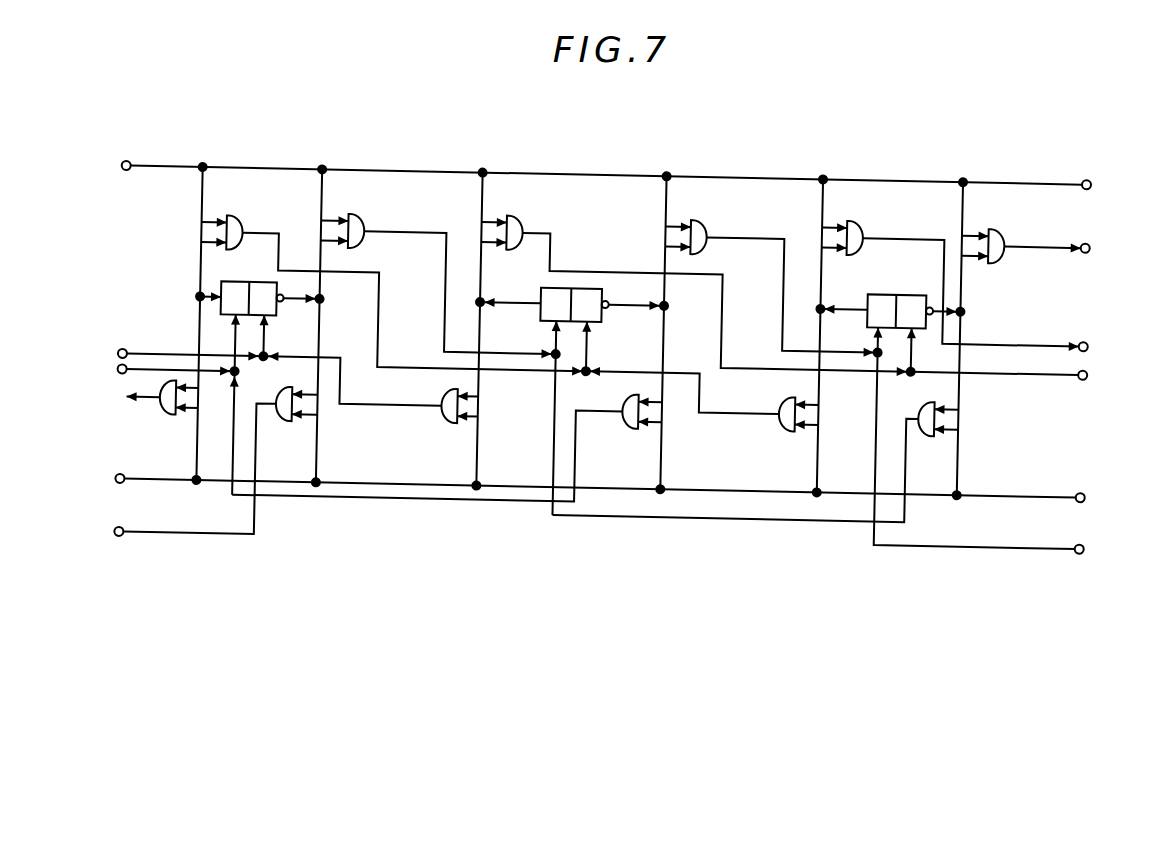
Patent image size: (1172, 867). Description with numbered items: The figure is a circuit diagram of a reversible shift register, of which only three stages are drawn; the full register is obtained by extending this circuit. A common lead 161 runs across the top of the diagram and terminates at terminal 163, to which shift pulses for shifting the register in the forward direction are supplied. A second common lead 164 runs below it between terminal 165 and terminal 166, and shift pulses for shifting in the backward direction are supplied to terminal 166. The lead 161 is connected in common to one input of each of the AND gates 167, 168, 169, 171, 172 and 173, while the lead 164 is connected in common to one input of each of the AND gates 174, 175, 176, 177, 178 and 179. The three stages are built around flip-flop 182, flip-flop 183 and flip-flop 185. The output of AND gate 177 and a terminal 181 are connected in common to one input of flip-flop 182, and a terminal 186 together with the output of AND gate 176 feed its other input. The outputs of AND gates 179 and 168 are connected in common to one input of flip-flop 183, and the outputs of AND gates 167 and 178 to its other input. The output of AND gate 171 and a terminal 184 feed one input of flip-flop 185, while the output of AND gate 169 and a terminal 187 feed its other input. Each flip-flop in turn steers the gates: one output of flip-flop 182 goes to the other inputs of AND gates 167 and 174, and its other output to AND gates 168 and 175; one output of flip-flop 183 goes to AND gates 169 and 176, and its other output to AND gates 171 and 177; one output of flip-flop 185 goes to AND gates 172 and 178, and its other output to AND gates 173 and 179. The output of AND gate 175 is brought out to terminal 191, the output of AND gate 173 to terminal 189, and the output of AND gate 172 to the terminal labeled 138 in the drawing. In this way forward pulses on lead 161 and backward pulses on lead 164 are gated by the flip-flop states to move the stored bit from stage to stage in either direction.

The common lead 161 is at (123, 170).
The terminal 163 is at (1086, 170).
The common lead 164 is at (412, 486).
The terminal 165 is at (118, 488).
The terminal 166 is at (1090, 484).
The AND gate 167 is at (236, 226).
The AND gate 168 is at (354, 224).
The AND gate 169 is at (514, 220).
The AND gate 171 is at (693, 222).
The AND gate 172 is at (850, 221).
The AND gate 173 is at (993, 232).
The AND gate 174 is at (165, 418).
The AND gate 175 is at (286, 428).
The AND gate 176 is at (447, 424).
The AND gate 177 is at (627, 403).
The AND gate 178 is at (782, 426).
The AND gate 179 is at (929, 410).
The terminal 181 is at (118, 379).
The flip-flop 182 is at (246, 284).
The flip-flop 183 is at (545, 289).
The terminal 184 is at (1090, 540).
The flip-flop 185 is at (878, 289).
The terminal 186 is at (124, 359).
The terminal 187 is at (1088, 370).
The terminal 189 is at (1088, 243).
The output terminal 138 is at (1087, 333).
The terminal 191 is at (118, 541).